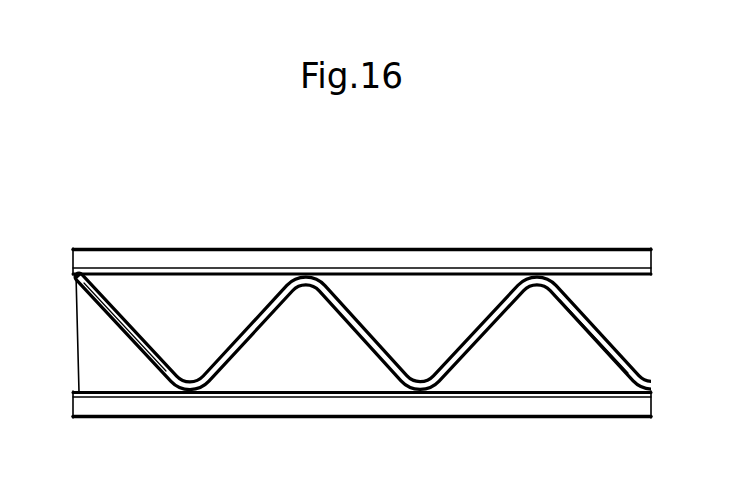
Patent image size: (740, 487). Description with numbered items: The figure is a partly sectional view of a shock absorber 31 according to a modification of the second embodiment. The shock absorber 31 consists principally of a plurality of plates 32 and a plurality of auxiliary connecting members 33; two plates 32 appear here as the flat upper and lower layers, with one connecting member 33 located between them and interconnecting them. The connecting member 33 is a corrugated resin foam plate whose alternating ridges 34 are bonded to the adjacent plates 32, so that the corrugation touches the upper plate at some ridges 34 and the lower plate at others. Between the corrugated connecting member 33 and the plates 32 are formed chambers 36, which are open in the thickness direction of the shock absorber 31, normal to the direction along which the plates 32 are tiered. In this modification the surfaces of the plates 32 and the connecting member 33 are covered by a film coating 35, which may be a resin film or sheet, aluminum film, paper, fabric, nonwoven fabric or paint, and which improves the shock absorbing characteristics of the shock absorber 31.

The shock absorber 31 is at (386, 326).
The plate 32 is at (586, 267).
The auxiliary connecting member 33 is at (253, 337).
The ridge 34 is at (308, 279).
The film coating 35 is at (118, 248).
The chamber 36 is at (213, 312).